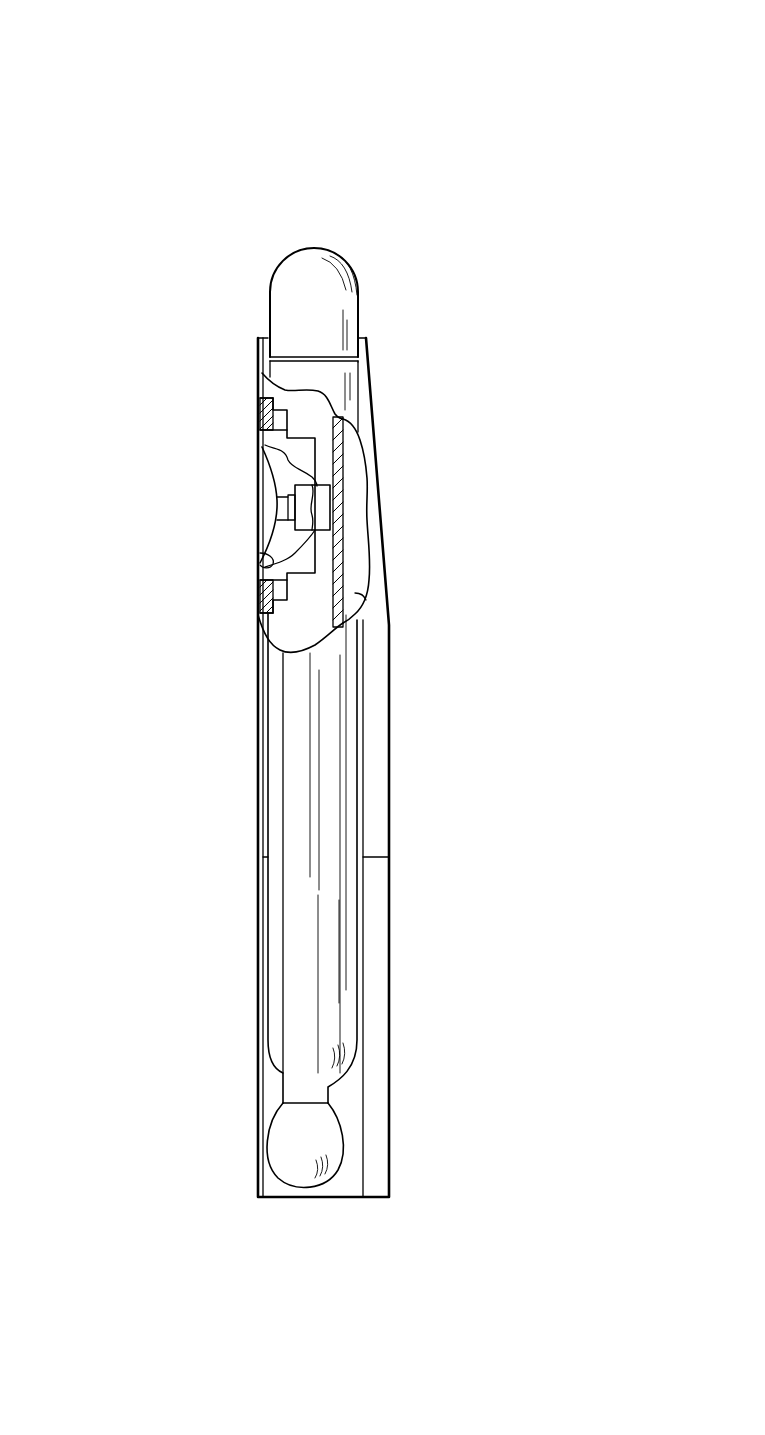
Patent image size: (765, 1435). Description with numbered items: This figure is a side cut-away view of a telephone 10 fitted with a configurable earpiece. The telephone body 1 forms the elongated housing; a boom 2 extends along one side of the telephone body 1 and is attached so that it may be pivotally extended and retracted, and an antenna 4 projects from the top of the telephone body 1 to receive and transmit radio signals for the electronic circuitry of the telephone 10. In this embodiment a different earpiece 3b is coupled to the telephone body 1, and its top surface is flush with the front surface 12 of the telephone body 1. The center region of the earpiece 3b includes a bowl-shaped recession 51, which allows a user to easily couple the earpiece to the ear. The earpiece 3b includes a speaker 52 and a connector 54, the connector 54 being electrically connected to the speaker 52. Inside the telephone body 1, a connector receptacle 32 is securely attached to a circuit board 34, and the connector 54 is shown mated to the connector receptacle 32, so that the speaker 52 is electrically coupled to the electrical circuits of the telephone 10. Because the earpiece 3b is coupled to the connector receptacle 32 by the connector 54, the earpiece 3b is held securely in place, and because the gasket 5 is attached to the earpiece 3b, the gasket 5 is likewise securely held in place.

The telephone 10 is at (421, 81).
The front surface 12 is at (236, 718).
The telephone body 1 is at (375, 1121).
The boom 2 is at (290, 990).
The antenna 4 is at (290, 266).
The rubber gasket 5 is at (260, 412).
The earpiece 3b is at (268, 437).
The bowl-shaped recession 51 is at (258, 476).
The speaker 52 is at (273, 562).
The connector receptacle 32 is at (323, 494).
The connector 54 is at (305, 524).
The circuit board 34 is at (357, 593).